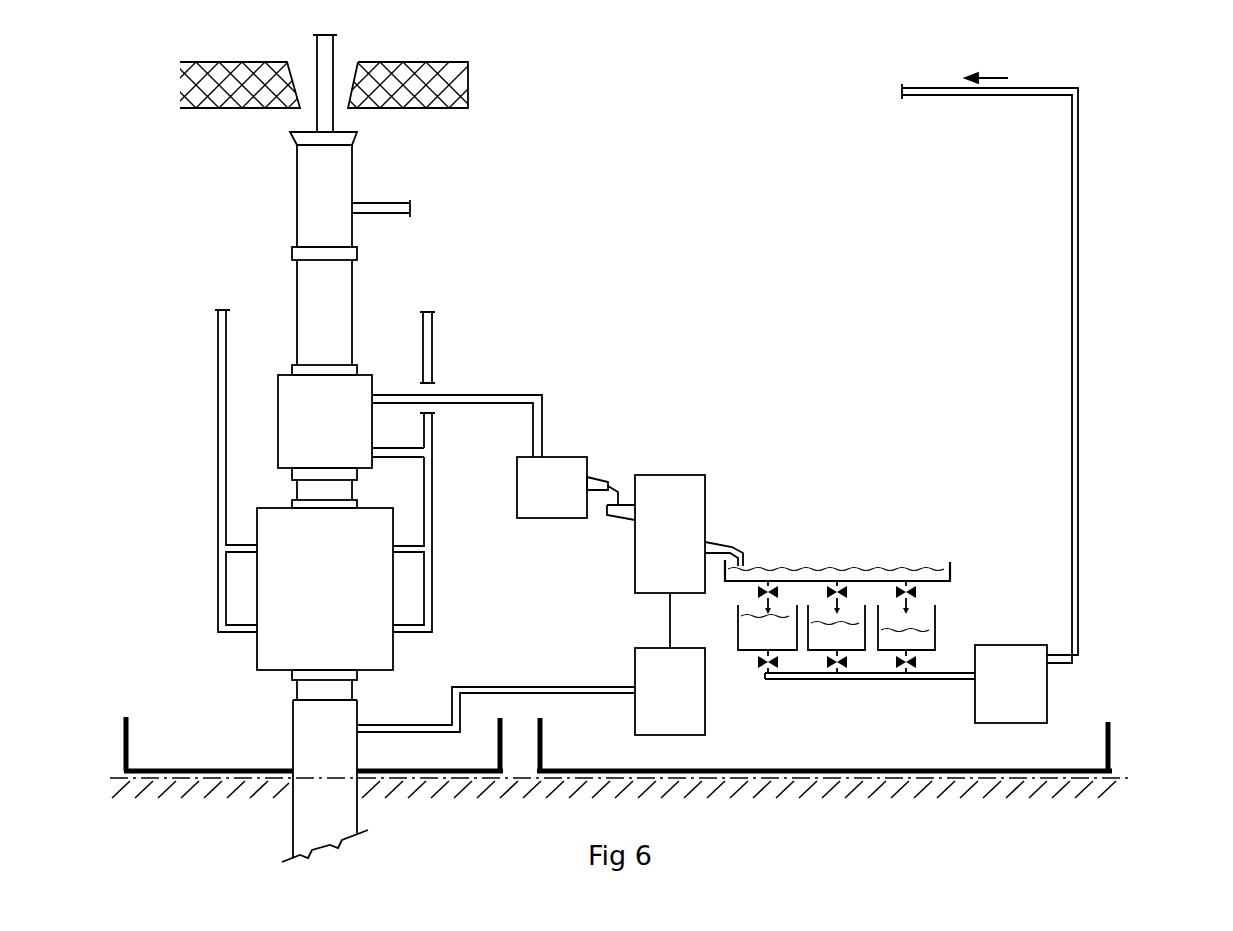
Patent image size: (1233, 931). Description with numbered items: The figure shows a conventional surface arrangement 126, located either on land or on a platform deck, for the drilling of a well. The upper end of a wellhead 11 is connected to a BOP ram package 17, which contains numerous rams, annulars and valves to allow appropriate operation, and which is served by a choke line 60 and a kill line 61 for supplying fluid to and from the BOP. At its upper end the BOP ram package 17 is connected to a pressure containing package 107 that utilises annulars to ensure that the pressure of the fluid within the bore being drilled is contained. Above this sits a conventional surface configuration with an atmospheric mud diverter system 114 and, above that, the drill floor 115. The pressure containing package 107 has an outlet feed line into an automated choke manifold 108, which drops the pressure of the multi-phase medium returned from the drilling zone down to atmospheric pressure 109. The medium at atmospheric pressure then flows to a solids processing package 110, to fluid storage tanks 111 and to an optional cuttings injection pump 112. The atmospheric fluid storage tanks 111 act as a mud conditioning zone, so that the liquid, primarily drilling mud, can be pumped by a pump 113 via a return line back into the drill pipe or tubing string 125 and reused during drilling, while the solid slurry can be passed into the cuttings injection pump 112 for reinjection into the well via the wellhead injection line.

The wellhead 11 is at (293, 728).
The BOP ram package 17 is at (257, 585).
The choke line 60 is at (218, 345).
The kill line 61 is at (432, 333).
The pressure containing package 107 is at (278, 428).
The automated choke manifold 108 is at (565, 455).
The atmospheric pressure 109 is at (618, 490).
The solids processing package 110 is at (707, 490).
The fluid storage tanks 111 is at (790, 650).
The cuttings injection pump 112 is at (707, 707).
The pump 113 is at (1047, 683).
The atmospheric mud diverter system 114 is at (404, 167).
The drill floor 115 is at (470, 85).
The drill pipe or tubing string 125 is at (964, 368).
The surface arrangement 126 is at (1133, 778).